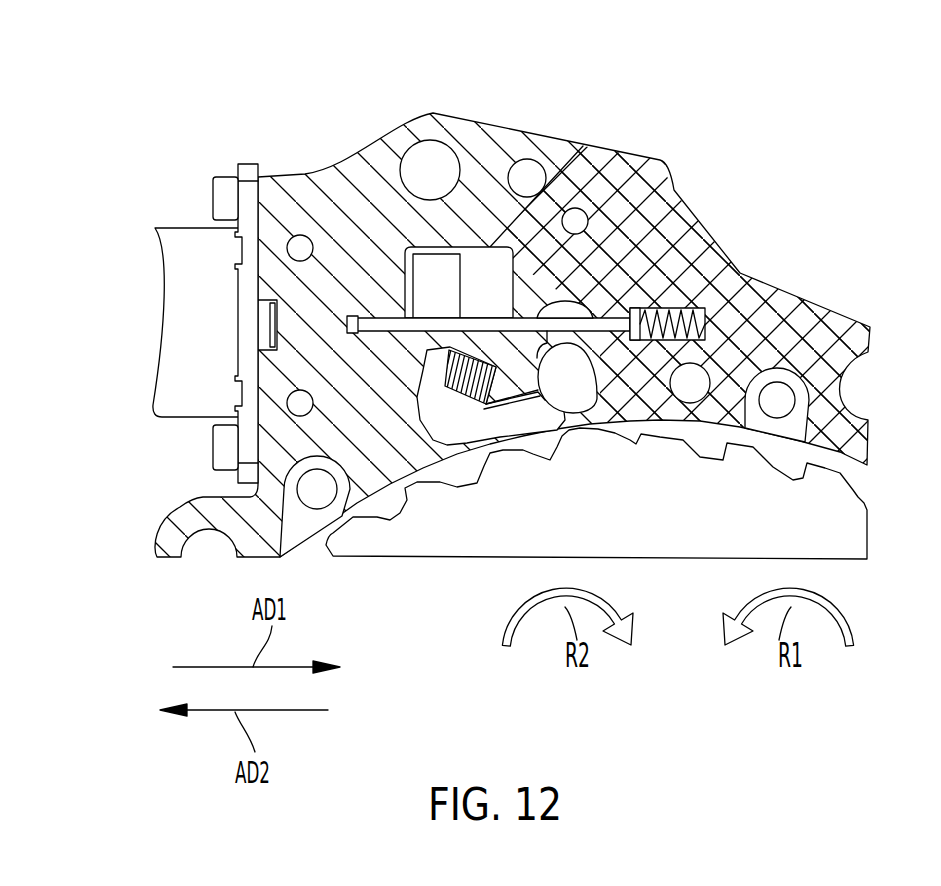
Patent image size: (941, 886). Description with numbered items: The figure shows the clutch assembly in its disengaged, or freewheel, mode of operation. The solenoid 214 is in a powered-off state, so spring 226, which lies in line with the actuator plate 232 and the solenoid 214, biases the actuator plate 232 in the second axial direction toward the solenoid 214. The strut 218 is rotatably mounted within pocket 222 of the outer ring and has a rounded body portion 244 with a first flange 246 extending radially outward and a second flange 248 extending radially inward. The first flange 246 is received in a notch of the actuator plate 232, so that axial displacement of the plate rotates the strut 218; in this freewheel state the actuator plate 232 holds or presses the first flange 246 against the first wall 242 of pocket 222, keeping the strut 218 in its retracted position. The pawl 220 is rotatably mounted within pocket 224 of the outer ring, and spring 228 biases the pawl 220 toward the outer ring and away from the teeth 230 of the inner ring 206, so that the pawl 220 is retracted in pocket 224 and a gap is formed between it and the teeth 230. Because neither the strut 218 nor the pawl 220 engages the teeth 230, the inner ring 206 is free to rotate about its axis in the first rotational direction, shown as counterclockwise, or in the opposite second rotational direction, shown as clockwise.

The inner ring 206 is at (858, 497).
The solenoid 214 is at (170, 228).
The strut 218 is at (596, 330).
The pawl 220 is at (450, 417).
The pocket 222 is at (574, 355).
The pocket 224 is at (440, 370).
The spring 226 is at (714, 238).
The spring 228 is at (465, 356).
The teeth 230 is at (790, 362).
The actuator plate 232 is at (470, 318).
The first wall 242 is at (560, 352).
The rounded body portion 244 is at (636, 312).
The first flange 246 is at (518, 318).
The second flange 248 is at (712, 365).